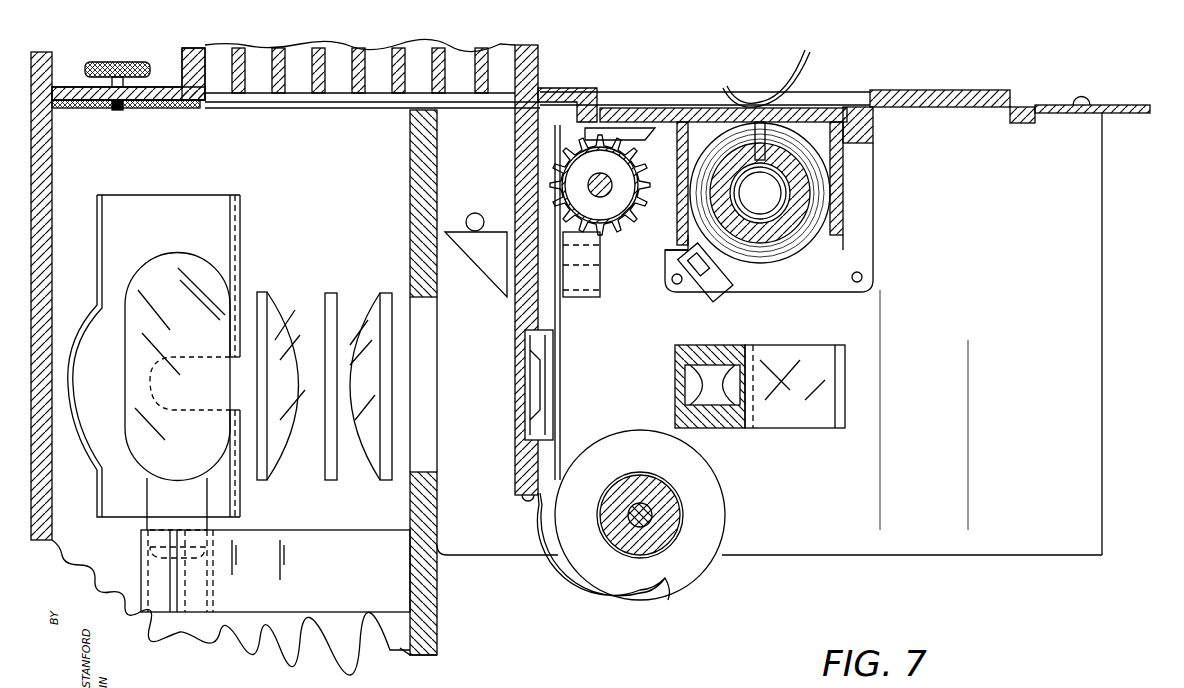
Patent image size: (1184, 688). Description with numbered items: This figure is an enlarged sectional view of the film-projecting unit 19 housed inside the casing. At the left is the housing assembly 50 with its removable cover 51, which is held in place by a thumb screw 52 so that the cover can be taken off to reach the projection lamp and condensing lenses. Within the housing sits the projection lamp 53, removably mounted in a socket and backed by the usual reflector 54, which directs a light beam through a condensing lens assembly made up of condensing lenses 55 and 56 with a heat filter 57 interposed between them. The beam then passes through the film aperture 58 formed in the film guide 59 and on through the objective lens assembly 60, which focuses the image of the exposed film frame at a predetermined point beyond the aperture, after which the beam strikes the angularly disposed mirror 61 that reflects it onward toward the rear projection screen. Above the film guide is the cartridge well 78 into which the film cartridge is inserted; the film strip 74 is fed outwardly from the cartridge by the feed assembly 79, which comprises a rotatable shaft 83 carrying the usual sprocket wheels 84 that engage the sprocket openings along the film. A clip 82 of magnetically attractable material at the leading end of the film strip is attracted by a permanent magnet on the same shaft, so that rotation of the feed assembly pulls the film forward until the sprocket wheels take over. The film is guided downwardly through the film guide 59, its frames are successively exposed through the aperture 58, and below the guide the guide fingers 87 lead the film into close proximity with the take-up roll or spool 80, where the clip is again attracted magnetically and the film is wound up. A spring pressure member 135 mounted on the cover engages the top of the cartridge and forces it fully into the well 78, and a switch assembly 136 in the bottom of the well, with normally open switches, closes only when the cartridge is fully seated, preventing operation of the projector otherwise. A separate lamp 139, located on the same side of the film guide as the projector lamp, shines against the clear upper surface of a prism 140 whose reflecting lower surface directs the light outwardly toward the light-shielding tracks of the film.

The film-projecting unit 19 is at (1040, 380).
The housing assembly 50 is at (438, 593).
The removable cover 51 is at (153, 86).
The thumb screw 52 is at (103, 62).
The projection lamp 53 is at (205, 270).
The reflector 54 is at (98, 212).
The condensing lens 55 is at (278, 310).
The condensing lens 56 is at (374, 298).
The heat filter 57 is at (335, 293).
The film aperture 58 is at (518, 393).
The film guide 59 is at (513, 315).
The objective lens assembly 60 is at (718, 400).
The angularly disposed mirror 61 is at (813, 353).
The film strip 74 is at (702, 127).
The cartridge well 78 is at (858, 188).
The feed assembly 79 is at (600, 177).
The take-up roll or spool 80 is at (667, 520).
The clip 82 is at (580, 130).
The rotatable shaft 83 is at (595, 133).
The sprocket wheels 84 is at (552, 185).
The guide fingers 87 is at (648, 577).
The spring pressure member 135 is at (812, 57).
The switch assembly 136 is at (712, 302).
The lamp 139 is at (466, 213).
The prism 140 is at (473, 255).